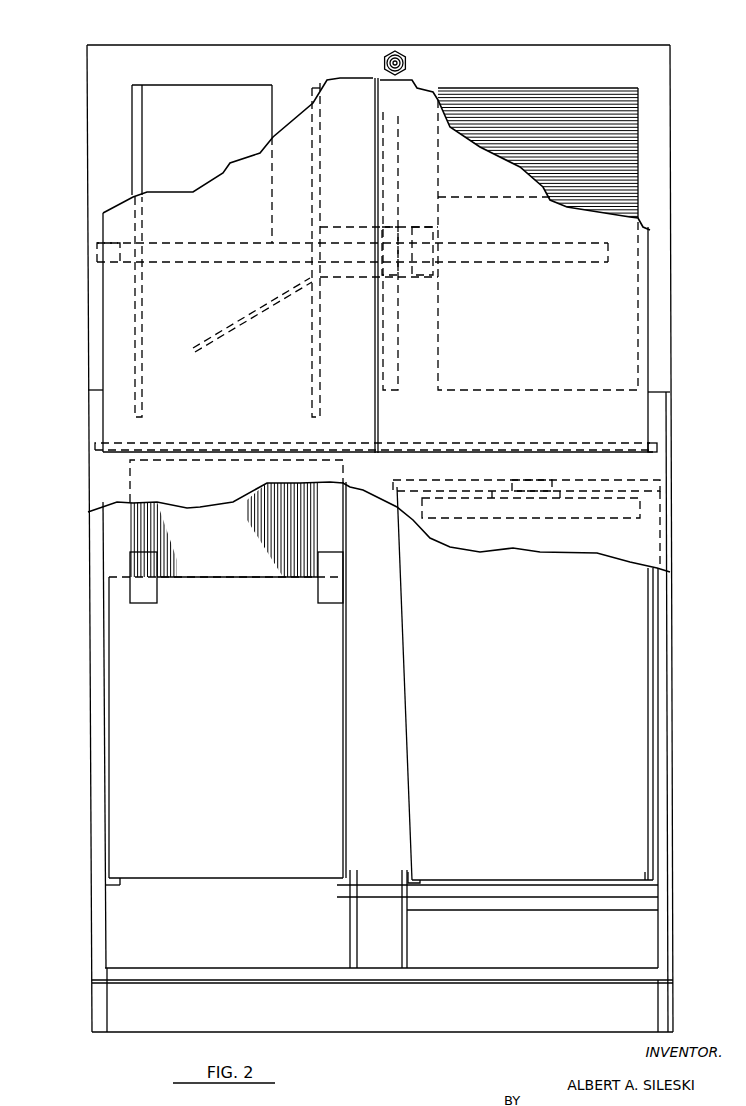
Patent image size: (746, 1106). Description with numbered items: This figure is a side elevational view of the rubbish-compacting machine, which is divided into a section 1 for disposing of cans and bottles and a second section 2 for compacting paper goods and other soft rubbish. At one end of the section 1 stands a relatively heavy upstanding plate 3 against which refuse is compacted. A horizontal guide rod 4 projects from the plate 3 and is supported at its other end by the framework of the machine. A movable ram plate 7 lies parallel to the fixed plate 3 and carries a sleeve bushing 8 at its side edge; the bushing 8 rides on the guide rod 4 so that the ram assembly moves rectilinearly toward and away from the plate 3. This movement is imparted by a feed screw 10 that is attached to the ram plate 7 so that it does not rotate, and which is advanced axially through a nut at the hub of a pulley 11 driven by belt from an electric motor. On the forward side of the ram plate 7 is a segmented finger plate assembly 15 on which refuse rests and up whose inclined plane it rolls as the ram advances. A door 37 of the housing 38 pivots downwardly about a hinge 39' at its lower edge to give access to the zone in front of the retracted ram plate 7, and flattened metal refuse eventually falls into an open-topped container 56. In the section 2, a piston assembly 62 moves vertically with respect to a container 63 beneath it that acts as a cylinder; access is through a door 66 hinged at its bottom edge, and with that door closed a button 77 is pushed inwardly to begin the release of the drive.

The section 1 is at (76, 672).
The second section 2 is at (682, 648).
The upstanding plate 3 is at (137, 107).
The horizontal guide rod 4 is at (187, 252).
The ram plate 7 is at (313, 88).
The sleeve bushing 8 is at (353, 227).
The feed screw 10 is at (483, 258).
The pulley 11 is at (387, 400).
The finger plate assembly 15 is at (247, 315).
The door 37 is at (248, 370).
The housing 38 is at (98, 472).
The hinge 39' is at (595, 339).
The open-topped container 56 is at (188, 760).
The piston assembly 62 is at (553, 507).
The container 63 is at (492, 763).
The door 66 is at (492, 372).
The button 77 is at (405, 47).